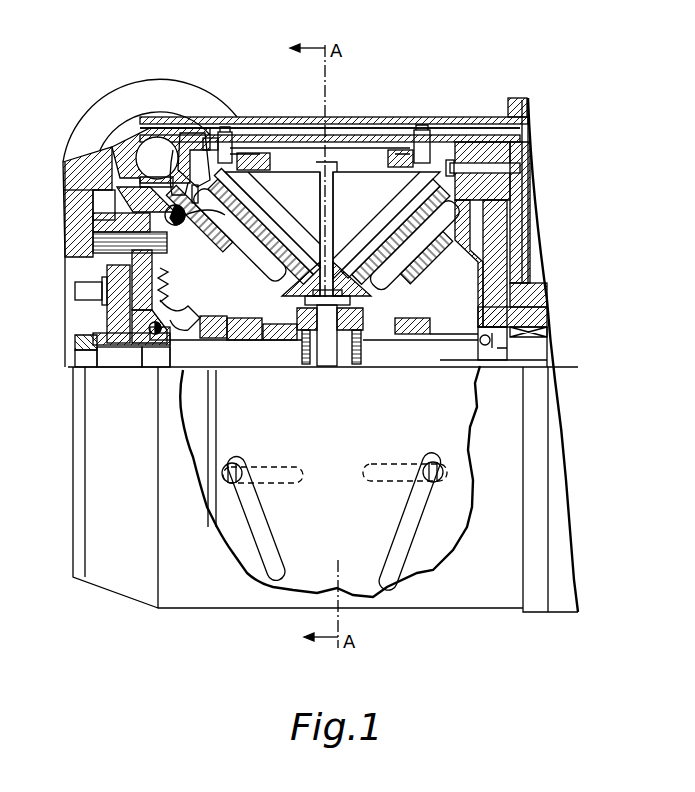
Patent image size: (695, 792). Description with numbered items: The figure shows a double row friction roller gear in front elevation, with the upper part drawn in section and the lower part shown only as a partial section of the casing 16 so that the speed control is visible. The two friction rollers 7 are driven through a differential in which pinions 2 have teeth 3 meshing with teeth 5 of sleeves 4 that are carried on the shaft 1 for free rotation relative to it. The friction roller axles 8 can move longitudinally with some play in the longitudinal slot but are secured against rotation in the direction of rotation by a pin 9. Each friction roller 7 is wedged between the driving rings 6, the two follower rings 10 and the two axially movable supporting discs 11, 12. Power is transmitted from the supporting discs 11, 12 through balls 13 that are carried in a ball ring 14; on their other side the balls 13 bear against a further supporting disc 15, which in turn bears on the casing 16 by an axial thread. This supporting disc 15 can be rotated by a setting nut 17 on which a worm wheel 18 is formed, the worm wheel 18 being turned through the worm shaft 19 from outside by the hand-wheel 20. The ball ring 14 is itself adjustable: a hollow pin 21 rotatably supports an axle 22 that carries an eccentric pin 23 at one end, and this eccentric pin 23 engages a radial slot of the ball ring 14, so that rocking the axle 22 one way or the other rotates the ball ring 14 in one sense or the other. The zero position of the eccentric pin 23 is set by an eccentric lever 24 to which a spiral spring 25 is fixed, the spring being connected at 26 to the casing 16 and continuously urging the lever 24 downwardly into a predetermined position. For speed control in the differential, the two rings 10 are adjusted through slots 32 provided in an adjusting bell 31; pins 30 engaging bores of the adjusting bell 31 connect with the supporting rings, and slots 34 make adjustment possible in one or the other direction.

The shaft 1 is at (202, 370).
The pinions 2 is at (334, 318).
The teeth 3 is at (310, 360).
The sleeves 4 is at (258, 340).
The teeth 5 is at (305, 300).
The driving rings 6 is at (270, 340).
The friction rollers 7 is at (305, 216).
The friction roller axles 8 is at (258, 230).
The pin 9 is at (200, 322).
The follower rings 10 is at (266, 163).
The supporting disc 11 is at (221, 132).
The supporting disc 12 is at (239, 230).
The balls 13 is at (183, 206).
The ball ring 14 is at (178, 192).
The supporting disc 15 is at (148, 197).
The casing 16 is at (64, 180).
The setting nut 17 is at (92, 210).
The worm wheel 18 is at (122, 150).
The worm shaft 19 is at (146, 142).
The hand-wheel 20 is at (122, 89).
The hollow pin 21 is at (101, 258).
The axle 22 is at (95, 244).
The eccentric pin 23 is at (179, 278).
The eccentric lever 24 is at (224, 273).
The spiral spring 25 is at (197, 294).
The connection point 26 is at (158, 305).
The pins 30 is at (232, 134).
The adjusting bell 31 is at (330, 140).
The slots 32 is at (238, 140).
The slots 34 is at (360, 148).